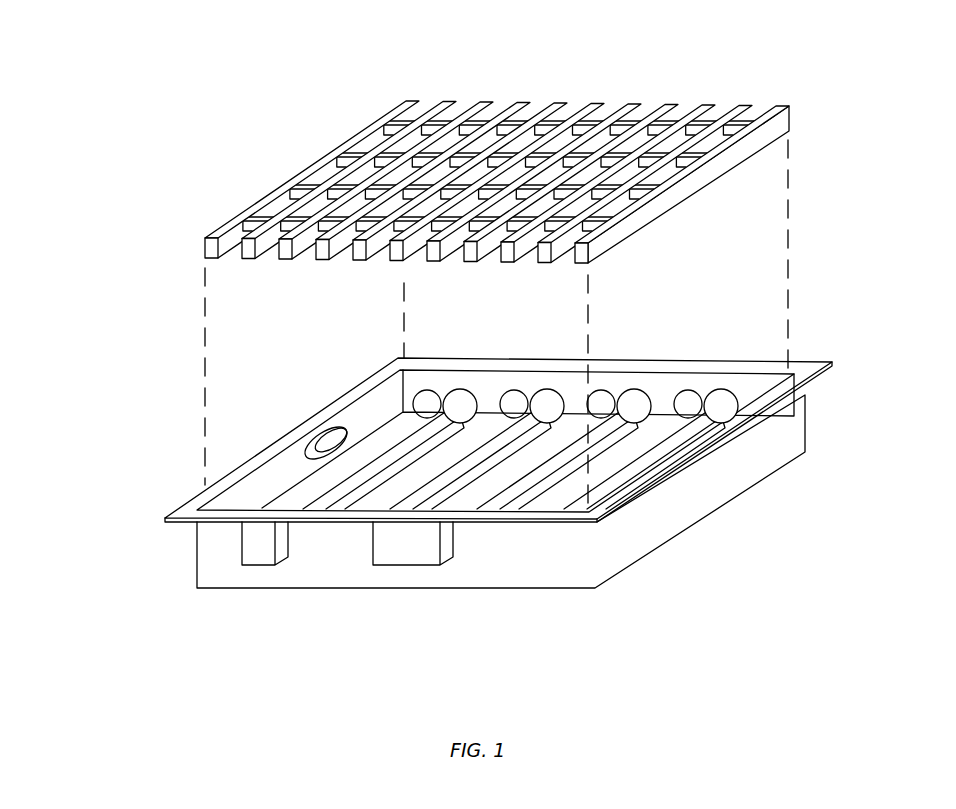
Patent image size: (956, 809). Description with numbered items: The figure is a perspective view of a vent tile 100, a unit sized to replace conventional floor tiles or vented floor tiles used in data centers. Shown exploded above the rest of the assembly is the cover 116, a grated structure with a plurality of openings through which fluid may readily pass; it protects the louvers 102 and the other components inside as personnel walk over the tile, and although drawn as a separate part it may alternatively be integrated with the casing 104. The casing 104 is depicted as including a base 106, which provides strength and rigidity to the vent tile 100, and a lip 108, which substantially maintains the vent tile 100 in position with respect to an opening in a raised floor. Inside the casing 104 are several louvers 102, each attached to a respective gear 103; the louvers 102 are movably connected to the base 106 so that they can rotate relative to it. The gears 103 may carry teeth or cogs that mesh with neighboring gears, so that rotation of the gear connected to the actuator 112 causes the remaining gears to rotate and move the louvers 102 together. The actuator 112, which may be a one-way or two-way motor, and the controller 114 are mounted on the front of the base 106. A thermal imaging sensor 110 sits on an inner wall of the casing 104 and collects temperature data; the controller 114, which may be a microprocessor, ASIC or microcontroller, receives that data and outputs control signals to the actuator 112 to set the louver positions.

The vent tile 100 is at (193, 99).
The louvers 102 is at (622, 478).
The gears 103 is at (741, 432).
The casing 104 is at (167, 517).
The base 106 is at (568, 588).
The lip 108 is at (812, 436).
The thermal imaging sensor 110 is at (302, 452).
The actuator 112 is at (398, 565).
The controller 114 is at (256, 565).
The cover 116 is at (750, 104).